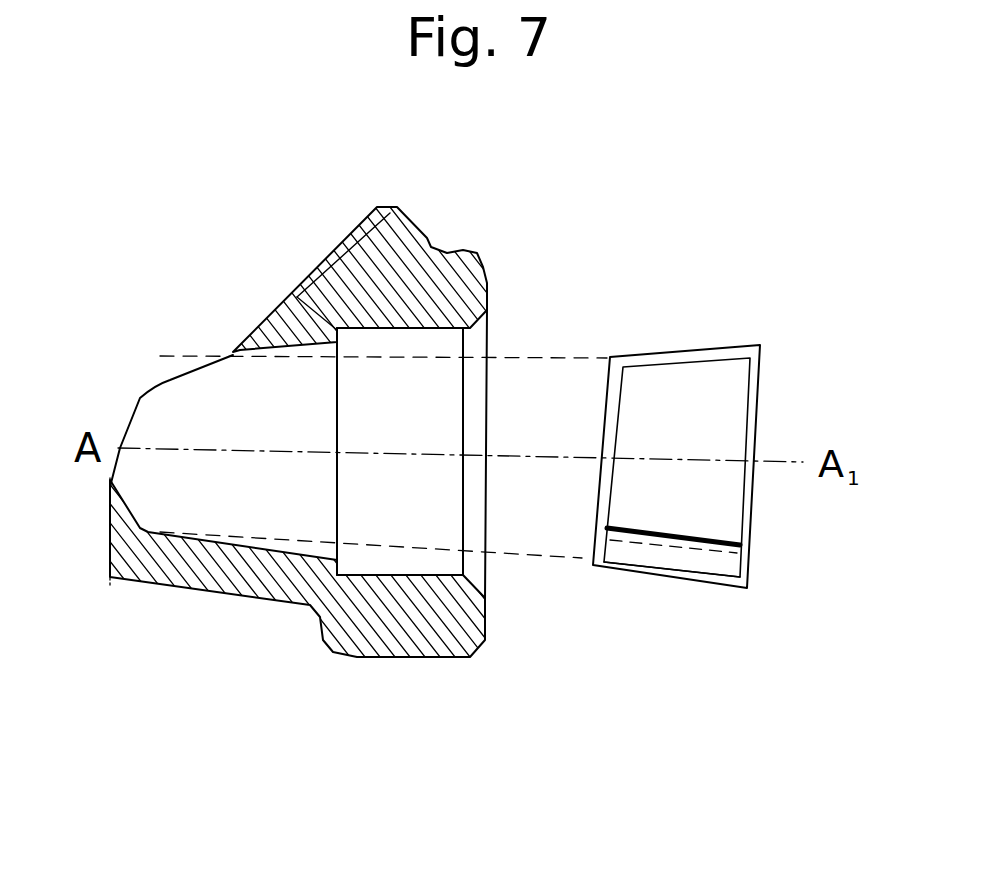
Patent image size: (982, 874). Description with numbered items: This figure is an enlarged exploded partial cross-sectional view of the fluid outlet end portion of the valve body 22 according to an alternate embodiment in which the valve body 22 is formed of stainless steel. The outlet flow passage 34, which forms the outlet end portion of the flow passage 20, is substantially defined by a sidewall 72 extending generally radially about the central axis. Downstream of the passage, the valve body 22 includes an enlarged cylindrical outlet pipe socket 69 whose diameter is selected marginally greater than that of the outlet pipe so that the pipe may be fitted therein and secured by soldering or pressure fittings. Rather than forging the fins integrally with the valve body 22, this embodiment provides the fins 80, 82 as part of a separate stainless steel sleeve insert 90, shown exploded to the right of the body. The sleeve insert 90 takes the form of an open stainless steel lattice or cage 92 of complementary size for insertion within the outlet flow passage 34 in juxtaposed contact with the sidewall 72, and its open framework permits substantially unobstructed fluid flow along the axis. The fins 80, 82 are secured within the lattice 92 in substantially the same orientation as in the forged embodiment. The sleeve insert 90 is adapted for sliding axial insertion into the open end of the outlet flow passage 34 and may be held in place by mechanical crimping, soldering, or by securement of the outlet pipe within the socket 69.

The flow passage 20 is at (310, 497).
The valve body 22 is at (297, 730).
The outlet flow passage 34 is at (248, 390).
The cylindrical outlet pipe socket 69 is at (350, 580).
The sidewall 72 is at (240, 535).
The fin 80 is at (636, 553).
The fin 82 is at (712, 558).
The stainless steel sleeve insert 90 is at (691, 457).
The lattice 92 is at (627, 357).